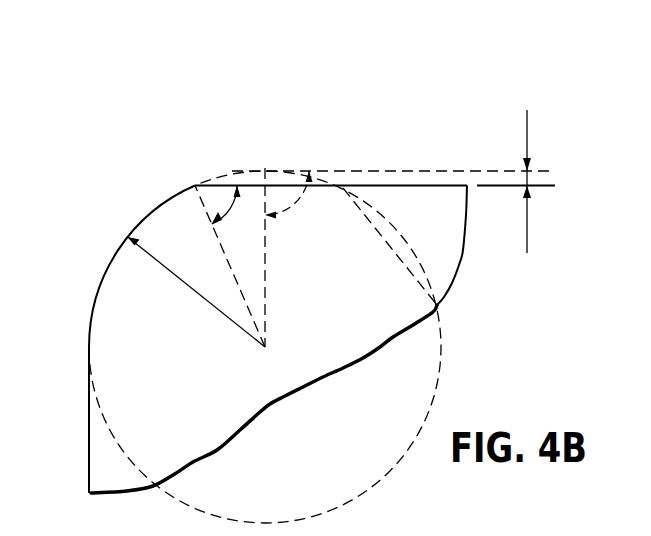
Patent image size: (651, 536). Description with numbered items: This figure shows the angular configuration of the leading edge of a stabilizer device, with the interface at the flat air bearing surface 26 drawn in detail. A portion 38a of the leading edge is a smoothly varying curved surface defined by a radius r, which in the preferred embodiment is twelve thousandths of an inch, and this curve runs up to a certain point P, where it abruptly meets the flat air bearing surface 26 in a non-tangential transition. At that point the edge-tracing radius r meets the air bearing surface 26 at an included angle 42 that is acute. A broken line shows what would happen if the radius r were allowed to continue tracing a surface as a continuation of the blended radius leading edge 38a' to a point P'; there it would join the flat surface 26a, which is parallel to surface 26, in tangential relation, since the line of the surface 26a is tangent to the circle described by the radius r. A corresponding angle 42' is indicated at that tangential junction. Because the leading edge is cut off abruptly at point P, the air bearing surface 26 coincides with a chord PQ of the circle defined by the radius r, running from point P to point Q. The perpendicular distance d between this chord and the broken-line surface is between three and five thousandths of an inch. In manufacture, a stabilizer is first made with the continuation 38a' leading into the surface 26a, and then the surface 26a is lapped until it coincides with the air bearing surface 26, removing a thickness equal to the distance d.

The portion of the leading edge 38a is at (116, 332).
The continuation of the blended radius leading edge 38a' is at (265, 299).
The flat surface 26a is at (384, 170).
The flat air bearing surface 26 is at (418, 186).
The point Q is at (321, 179).
The point P is at (201, 233).
The point P' is at (283, 214).
The radius r is at (178, 282).
The included angle 42 is at (209, 229).
The angle at projected point 42' is at (291, 228).
The perpendicular distance d is at (546, 178).